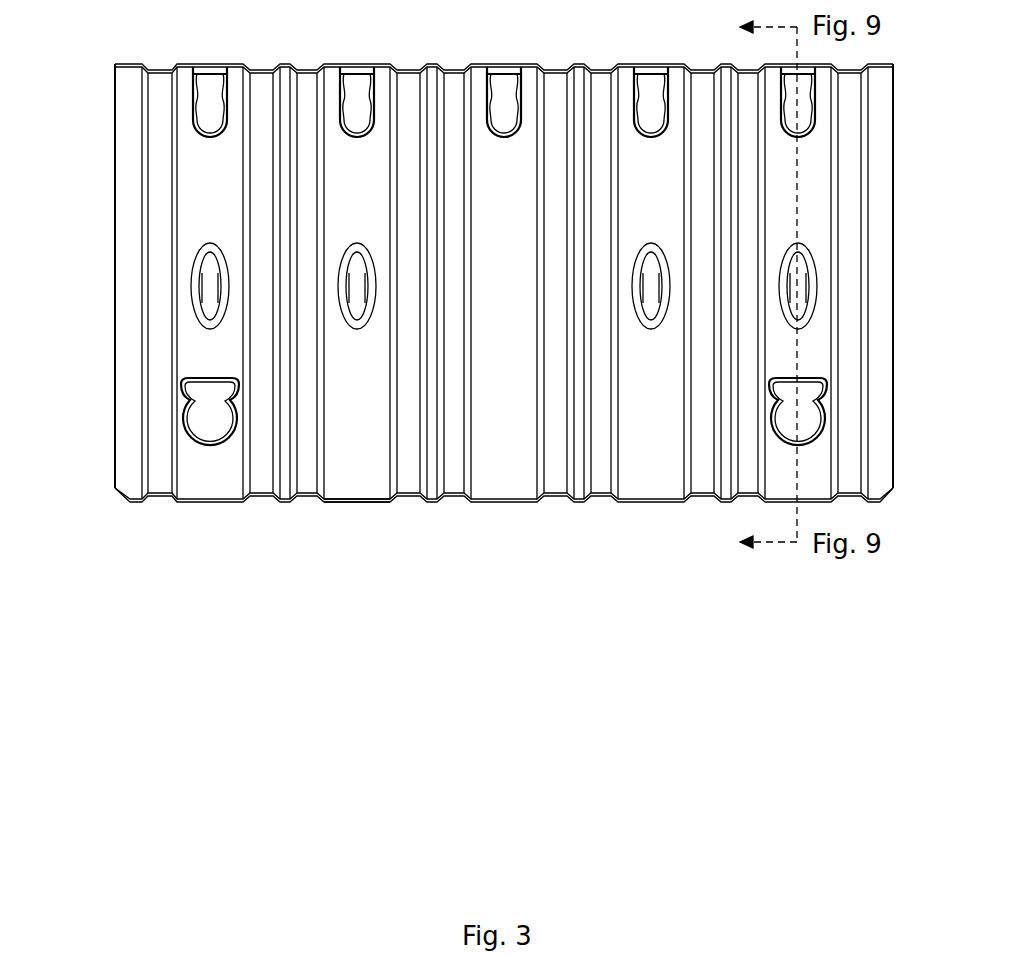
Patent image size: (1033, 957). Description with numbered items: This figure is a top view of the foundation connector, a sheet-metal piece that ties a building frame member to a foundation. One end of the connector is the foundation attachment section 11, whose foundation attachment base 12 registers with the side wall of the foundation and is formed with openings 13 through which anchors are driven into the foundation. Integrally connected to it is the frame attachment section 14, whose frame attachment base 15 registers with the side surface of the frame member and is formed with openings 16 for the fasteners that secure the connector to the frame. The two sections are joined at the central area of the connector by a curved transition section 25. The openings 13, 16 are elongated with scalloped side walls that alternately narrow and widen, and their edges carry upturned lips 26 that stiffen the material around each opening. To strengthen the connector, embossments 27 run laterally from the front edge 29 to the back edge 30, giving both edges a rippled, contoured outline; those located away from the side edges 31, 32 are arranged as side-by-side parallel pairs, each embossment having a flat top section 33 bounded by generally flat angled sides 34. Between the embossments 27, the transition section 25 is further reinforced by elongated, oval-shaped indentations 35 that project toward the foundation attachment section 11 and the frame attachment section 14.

The foundation attachment section 11 is at (108, 386).
The foundation attachment base 12 is at (893, 426).
The openings 13 is at (208, 420).
The frame attachment section 14 is at (108, 188).
The frame attachment base 15 is at (893, 91).
The openings 16 is at (212, 100).
The transition section 25 is at (893, 272).
The upturned lips 26 is at (226, 138).
The embossments 27 is at (160, 477).
The front edge 29 is at (470, 63).
The back edge 30 is at (365, 498).
The side edge 31 is at (113, 280).
The side edge 32 is at (893, 331).
The flat top sections 33 is at (408, 270).
The angled sides 34 is at (470, 310).
The indentations 35 is at (212, 268).